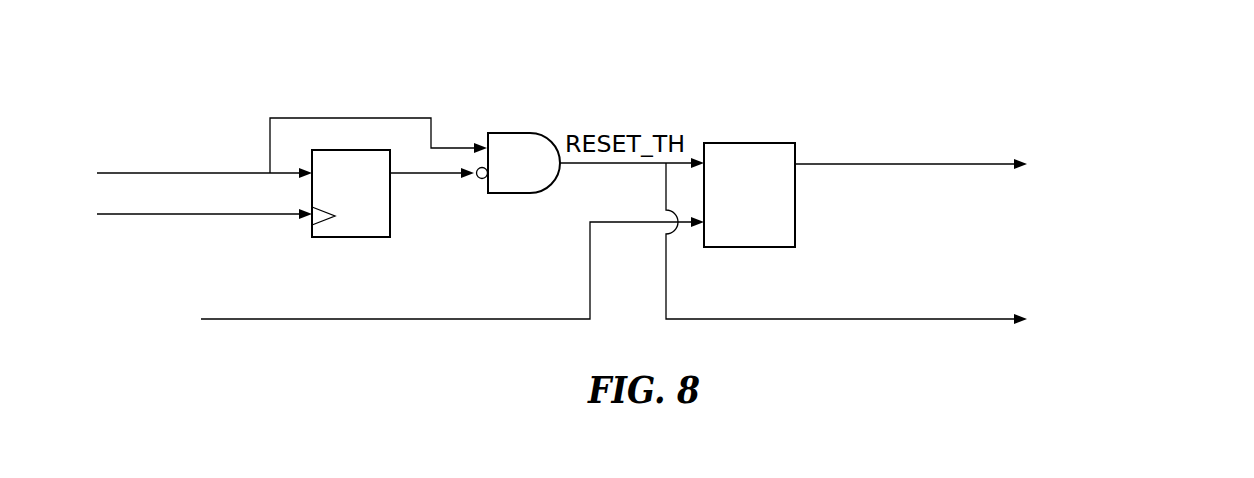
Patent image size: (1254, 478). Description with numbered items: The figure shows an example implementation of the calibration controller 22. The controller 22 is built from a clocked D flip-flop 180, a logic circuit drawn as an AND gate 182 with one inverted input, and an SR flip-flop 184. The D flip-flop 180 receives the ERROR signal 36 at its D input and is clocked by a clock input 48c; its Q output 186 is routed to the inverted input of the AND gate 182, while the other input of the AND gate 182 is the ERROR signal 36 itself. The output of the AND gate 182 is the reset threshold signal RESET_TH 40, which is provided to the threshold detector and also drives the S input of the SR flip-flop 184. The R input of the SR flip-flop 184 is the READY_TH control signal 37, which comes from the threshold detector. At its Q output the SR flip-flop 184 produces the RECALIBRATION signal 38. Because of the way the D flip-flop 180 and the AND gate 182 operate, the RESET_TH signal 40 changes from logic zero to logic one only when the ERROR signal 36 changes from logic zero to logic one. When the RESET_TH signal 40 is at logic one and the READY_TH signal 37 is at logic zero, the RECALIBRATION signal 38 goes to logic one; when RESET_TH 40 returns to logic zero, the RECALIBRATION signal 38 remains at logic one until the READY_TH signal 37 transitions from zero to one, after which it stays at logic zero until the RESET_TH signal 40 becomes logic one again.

The calibration controller 22 is at (726, 76).
The ERROR signal 36 is at (105, 173).
The clock input 48c is at (205, 214).
The D flip-flop 180 is at (351, 193).
The AND gate 182 is at (524, 163).
The Q output 186 is at (405, 173).
The SR flip-flop 184 is at (749, 195).
The RECALIBRATION signal 38 is at (950, 165).
The READY_TH control signal 37 is at (538, 320).
The RESET_TH signal 40 is at (888, 320).